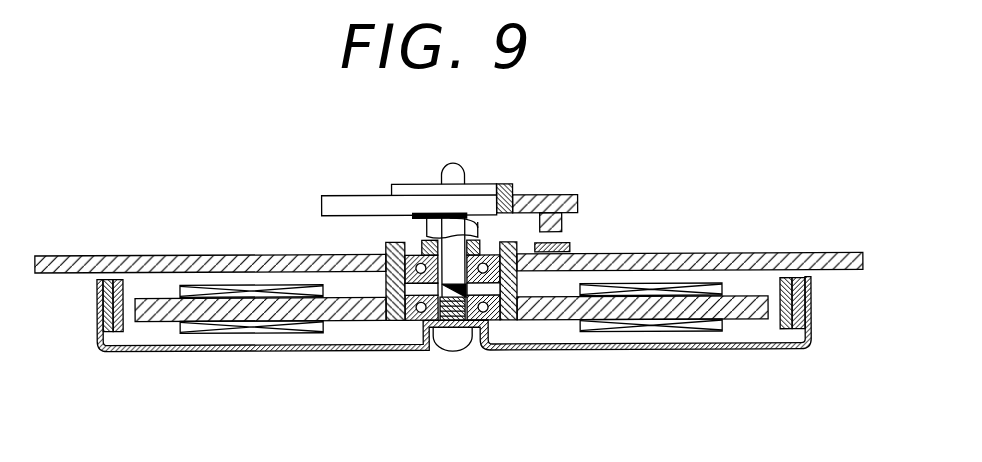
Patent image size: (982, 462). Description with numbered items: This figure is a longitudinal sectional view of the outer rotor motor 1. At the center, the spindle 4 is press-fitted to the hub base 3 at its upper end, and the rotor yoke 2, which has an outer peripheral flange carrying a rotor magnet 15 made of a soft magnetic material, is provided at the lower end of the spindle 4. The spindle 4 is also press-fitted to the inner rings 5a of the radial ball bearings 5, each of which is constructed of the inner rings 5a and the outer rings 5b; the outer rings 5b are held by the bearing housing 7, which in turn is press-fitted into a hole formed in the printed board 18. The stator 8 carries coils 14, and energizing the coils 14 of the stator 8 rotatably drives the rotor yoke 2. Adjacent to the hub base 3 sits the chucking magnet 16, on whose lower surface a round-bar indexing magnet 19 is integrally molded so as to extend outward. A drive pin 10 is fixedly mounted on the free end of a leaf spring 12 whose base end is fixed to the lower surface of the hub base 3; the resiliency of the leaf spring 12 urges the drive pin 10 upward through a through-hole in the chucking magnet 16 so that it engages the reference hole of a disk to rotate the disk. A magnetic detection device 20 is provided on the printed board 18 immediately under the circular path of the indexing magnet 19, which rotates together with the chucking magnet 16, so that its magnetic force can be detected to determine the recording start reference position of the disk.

The outer rotor motor 1 is at (683, 361).
The rotor yoke 2 is at (320, 352).
The hub base 3 is at (486, 192).
The spindle 4 is at (453, 163).
The radial ball bearings 5 is at (412, 248).
The inner rings 5a is at (475, 333).
The outer rings 5b is at (498, 328).
The bearing housing 7 is at (385, 283).
The stator 8 is at (172, 333).
The drive pin 10 is at (447, 176).
The leaf spring 12 is at (501, 187).
The coils 14 is at (241, 337).
The rotor magnet 15 is at (793, 304).
The chucking magnet 16 is at (532, 197).
The printed board 18 is at (110, 254).
The indexing magnet 19 is at (562, 231).
The magnetic detection device 20 is at (567, 250).